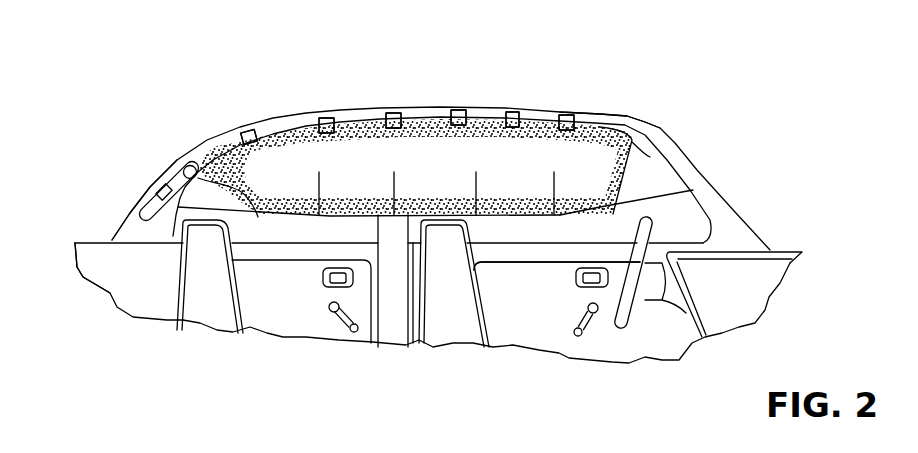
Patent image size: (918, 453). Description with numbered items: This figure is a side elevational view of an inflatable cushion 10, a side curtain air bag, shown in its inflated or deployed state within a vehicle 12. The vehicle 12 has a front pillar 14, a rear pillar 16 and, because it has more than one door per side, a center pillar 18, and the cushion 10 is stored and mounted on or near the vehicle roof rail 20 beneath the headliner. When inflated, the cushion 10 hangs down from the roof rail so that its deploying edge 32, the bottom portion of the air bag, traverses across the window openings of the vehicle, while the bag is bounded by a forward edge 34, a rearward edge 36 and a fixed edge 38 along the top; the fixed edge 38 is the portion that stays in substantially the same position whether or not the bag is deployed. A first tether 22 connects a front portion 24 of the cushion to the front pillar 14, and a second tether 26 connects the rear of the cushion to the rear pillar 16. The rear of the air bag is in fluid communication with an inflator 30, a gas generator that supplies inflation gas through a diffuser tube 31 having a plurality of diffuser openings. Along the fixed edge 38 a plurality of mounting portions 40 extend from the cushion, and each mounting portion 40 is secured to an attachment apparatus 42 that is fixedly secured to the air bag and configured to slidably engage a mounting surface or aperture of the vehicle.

The inflatable cushion 10 is at (380, 115).
The vehicle 12 is at (783, 248).
The front pillar 14 is at (707, 202).
The rear pillar 16 is at (133, 226).
The center pillar 18 is at (389, 322).
The vehicle roof rail 20 is at (563, 115).
The first tether 22 is at (662, 197).
The front portion 24 is at (300, 125).
The second tether 26 is at (173, 236).
The inflator 30 is at (150, 197).
The diffuser tube 31 is at (180, 182).
The deploying edge 32 is at (524, 214).
The forward edge 34 is at (650, 157).
The rearward edge 36 is at (197, 173).
The fixed edge 38 is at (465, 127).
The mounting portions 40 is at (250, 137).
The attachment apparatus 42 is at (247, 130).